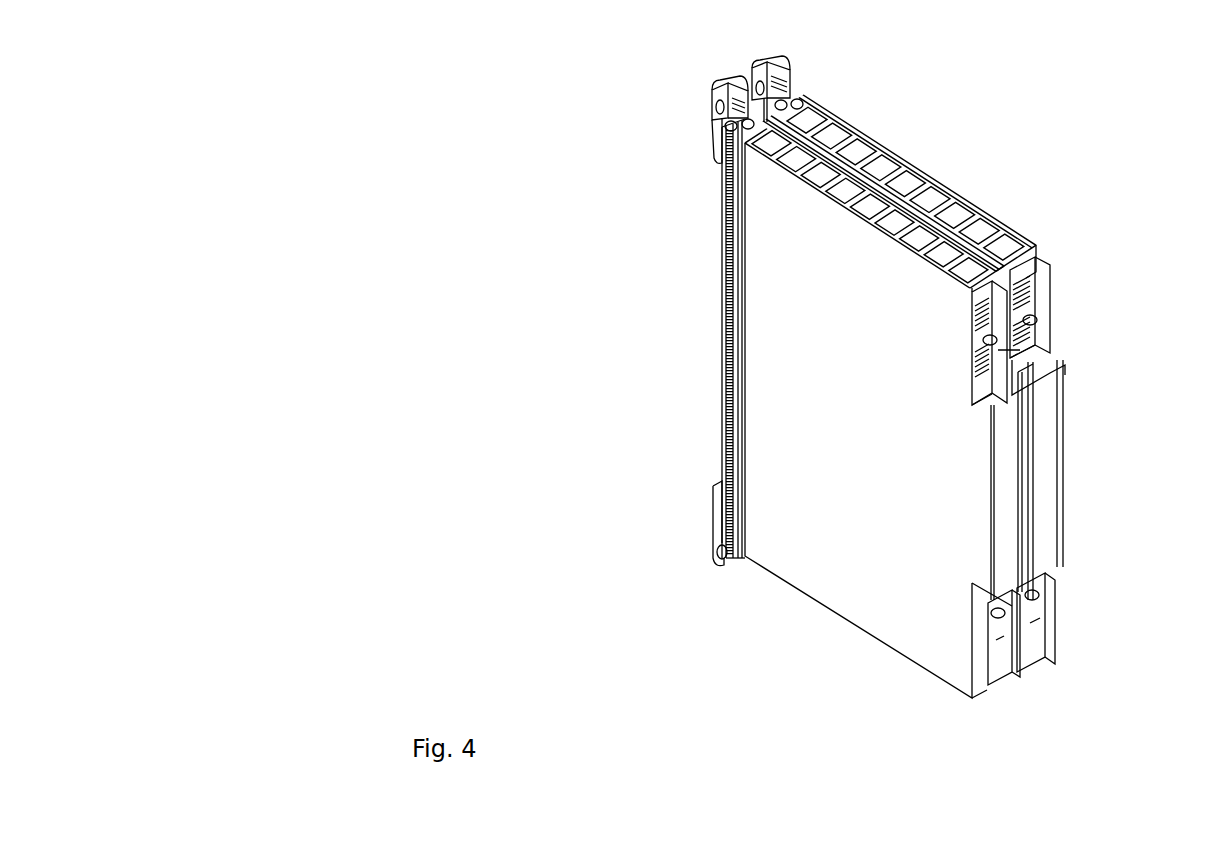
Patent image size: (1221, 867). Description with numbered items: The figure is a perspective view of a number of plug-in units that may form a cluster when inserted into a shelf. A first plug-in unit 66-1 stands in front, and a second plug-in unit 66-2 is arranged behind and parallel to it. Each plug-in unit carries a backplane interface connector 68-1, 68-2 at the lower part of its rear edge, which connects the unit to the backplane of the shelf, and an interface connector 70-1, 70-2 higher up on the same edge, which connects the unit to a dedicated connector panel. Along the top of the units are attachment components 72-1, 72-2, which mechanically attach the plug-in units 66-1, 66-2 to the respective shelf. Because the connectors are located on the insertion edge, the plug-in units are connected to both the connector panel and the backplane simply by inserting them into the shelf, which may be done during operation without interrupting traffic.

The first plug-in unit 66-1 is at (885, 481).
The second plug-in unit 66-2 is at (1043, 445).
The backplane interface connector 68-1 is at (1005, 682).
The backplane interface connector 68-2 is at (1045, 653).
The interface connector 70-1 is at (968, 312).
The interface connector 70-2 is at (1046, 342).
The attachment component 72-1 is at (718, 113).
The attachment component 72-2 is at (778, 56).